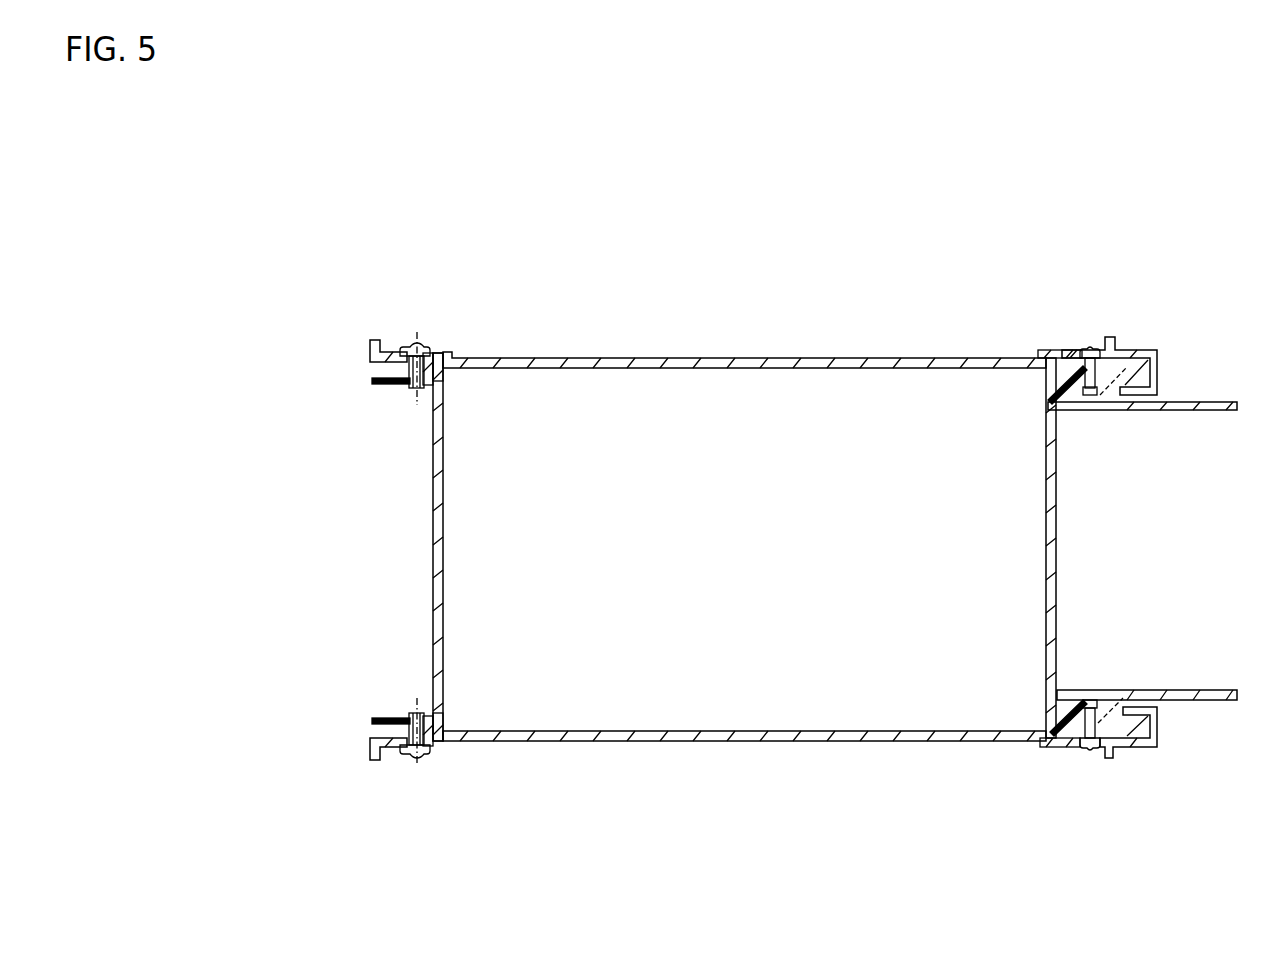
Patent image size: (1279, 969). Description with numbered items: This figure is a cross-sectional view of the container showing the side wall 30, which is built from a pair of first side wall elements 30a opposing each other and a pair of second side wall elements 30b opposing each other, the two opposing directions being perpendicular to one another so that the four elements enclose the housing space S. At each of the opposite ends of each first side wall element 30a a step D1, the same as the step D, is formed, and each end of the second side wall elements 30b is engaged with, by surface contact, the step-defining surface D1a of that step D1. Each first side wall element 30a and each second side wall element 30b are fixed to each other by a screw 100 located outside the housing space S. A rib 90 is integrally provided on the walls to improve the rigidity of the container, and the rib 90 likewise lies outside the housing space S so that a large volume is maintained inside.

The side wall 30 is at (738, 546).
The first side wall element 30a is at (842, 358).
The second side wall element 30b is at (433, 556).
The rib 90 is at (370, 343).
The screw 100 is at (420, 352).
The step D1 is at (435, 354).
The step-defining surface D1a is at (440, 370).
The housing space S is at (763, 556).